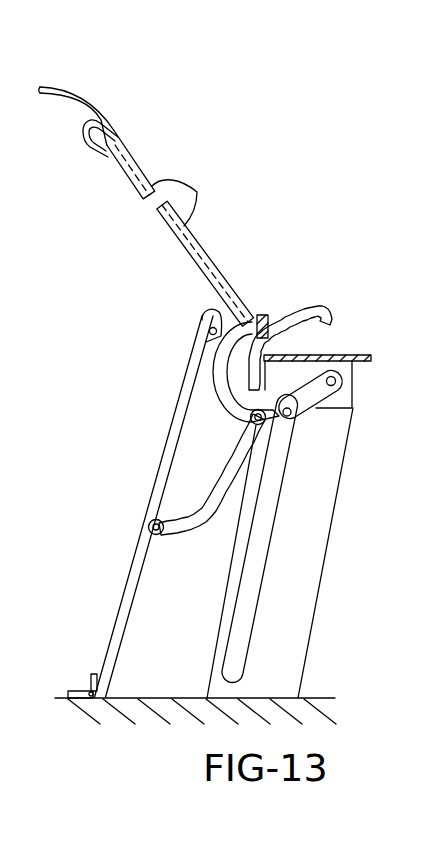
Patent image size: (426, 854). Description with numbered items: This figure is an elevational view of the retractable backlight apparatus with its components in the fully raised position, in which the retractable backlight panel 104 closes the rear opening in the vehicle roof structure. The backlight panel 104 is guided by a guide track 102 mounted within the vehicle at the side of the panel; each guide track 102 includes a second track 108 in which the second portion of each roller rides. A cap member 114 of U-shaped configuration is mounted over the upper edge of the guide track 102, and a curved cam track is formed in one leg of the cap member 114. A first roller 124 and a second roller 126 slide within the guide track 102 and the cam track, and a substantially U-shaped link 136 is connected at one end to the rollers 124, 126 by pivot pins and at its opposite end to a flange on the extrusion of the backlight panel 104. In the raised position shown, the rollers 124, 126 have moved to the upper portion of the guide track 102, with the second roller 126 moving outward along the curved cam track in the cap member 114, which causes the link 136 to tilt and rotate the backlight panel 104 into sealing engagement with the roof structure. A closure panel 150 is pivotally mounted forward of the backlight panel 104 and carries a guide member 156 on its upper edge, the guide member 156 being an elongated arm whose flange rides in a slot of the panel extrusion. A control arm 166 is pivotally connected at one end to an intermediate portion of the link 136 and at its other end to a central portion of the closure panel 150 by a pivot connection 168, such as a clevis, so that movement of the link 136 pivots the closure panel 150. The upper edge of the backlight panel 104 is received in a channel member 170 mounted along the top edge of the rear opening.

The guide track 102 is at (357, 645).
The retractable backlight panel 104 is at (199, 193).
The second track 108 is at (256, 570).
The cap member 114 is at (337, 400).
The first roller 124 is at (310, 355).
The second roller 126 is at (337, 354).
The link 136 is at (218, 348).
The closure panel 150 is at (157, 473).
The guide member 156 is at (212, 317).
The control arm 166 is at (237, 450).
The pivot connection 168 is at (149, 520).
The channel member 170 is at (84, 139).